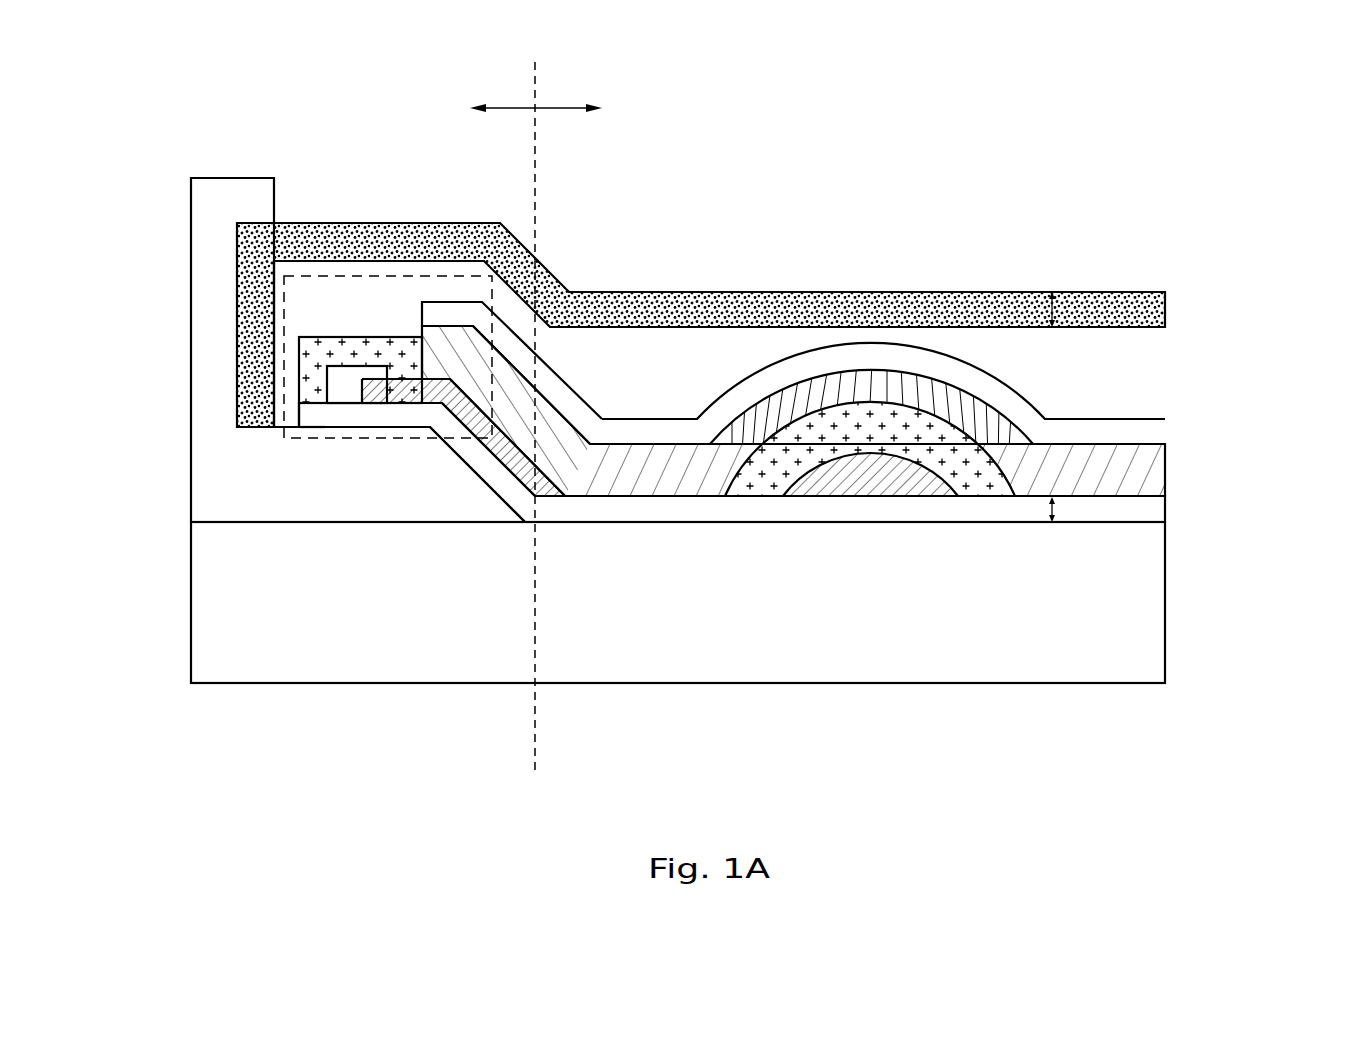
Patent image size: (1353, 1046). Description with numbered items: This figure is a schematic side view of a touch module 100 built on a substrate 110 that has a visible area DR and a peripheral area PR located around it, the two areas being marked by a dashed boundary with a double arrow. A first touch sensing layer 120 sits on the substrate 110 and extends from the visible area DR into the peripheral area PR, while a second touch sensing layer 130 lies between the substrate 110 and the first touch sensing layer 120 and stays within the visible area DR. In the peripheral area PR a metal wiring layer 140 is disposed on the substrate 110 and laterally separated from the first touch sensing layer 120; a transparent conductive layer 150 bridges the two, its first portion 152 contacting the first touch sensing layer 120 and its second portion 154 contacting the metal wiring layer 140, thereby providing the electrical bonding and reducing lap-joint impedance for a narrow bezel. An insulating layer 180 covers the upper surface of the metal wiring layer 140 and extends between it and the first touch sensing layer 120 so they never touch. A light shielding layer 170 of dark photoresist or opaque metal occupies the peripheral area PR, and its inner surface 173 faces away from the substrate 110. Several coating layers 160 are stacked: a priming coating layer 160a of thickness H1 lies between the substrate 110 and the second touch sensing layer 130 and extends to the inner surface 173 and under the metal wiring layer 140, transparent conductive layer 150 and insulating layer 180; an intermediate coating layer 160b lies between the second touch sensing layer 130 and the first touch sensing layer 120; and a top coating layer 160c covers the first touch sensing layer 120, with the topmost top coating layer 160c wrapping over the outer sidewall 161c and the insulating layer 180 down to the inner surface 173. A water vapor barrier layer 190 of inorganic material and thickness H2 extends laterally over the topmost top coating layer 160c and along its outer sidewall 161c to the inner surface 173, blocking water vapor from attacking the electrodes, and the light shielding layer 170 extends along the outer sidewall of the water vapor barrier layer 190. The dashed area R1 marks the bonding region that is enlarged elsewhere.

The touch module 100 is at (104, 61).
The substrate 110 is at (1155, 605).
The first touch sensing layer 120 is at (645, 487).
The second touch sensing layer 130 is at (875, 483).
The metal wiring layer 140 is at (326, 392).
The transparent conductive layer 150 is at (446, 589).
The first portion 152 is at (475, 417).
The second portion 154 is at (395, 398).
The coating layers 160 is at (1277, 370).
The priming coating layer 160a is at (1155, 508).
The intermediate coating layer 160b is at (980, 465).
The top coating layer 160c is at (1155, 377).
The outer sidewall of top coating layer 161c is at (405, 307).
The light shielding layer 170 is at (215, 480).
The inner surface of light shielding layer 173 is at (312, 447).
The insulating layer 180 is at (298, 352).
The water vapor barrier layer 190 is at (1155, 312).
The area R1 is at (348, 276).
The thickness of priming coating layer H1 is at (1072, 510).
The thickness of water vapor barrier layer H2 is at (1072, 309).
The peripheral area PR is at (436, 108).
The visible area DR is at (633, 108).